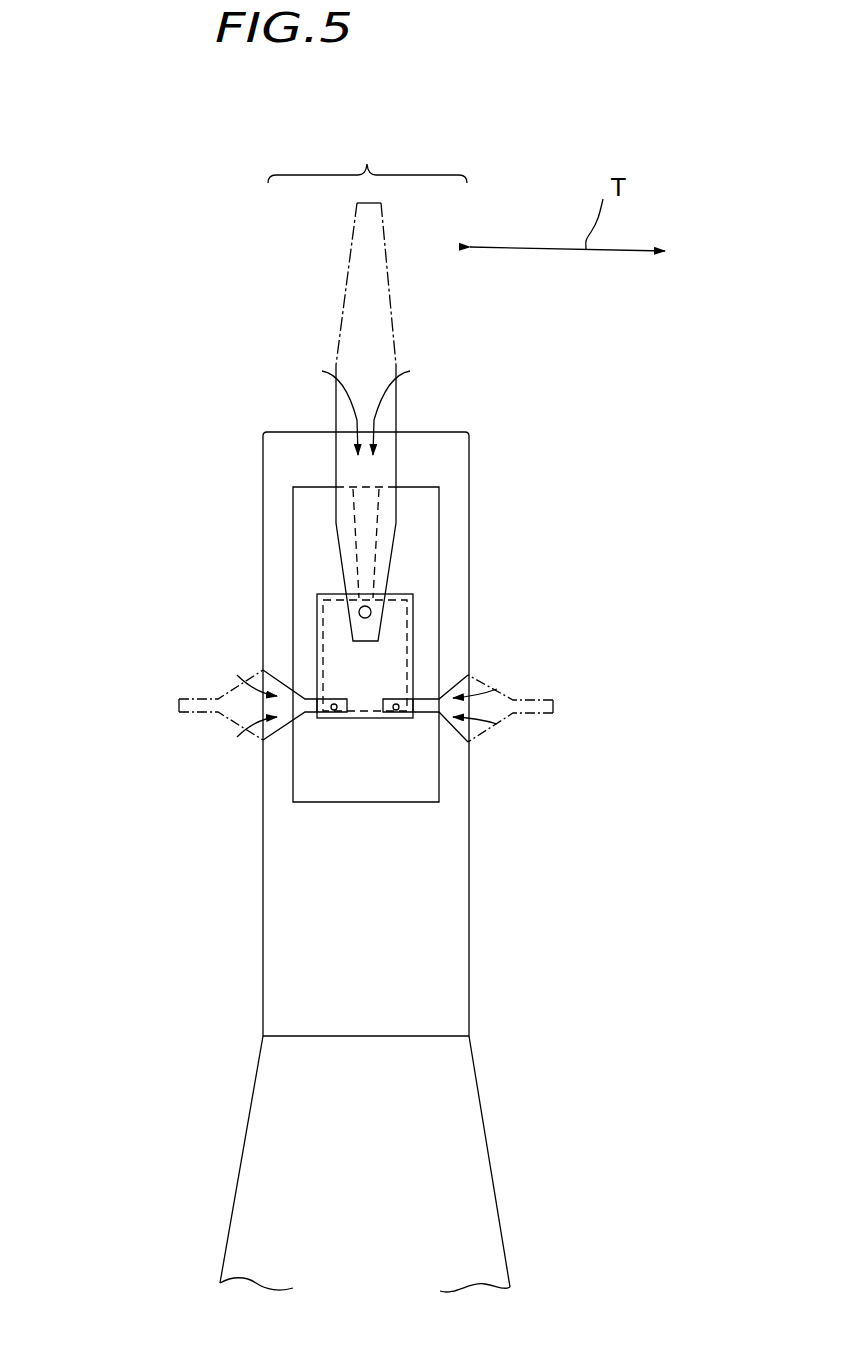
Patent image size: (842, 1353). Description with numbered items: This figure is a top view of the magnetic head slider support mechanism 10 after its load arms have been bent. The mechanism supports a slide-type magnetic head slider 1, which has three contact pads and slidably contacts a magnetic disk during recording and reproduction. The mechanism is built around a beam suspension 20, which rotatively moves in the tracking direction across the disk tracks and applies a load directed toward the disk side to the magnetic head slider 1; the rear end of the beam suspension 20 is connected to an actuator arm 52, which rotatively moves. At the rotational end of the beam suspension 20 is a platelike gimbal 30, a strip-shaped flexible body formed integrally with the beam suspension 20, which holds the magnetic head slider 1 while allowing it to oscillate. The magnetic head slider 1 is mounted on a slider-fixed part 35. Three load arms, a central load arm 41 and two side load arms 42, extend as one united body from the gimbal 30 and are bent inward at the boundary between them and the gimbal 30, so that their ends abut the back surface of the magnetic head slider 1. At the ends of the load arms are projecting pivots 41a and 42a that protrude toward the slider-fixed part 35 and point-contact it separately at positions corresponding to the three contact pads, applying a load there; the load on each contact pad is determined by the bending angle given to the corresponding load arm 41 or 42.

The magnetic head slider support mechanism 10 is at (367, 163).
The beam suspension 20 is at (445, 922).
The actuator arm 52 is at (476, 1121).
The gimbal 30 is at (455, 510).
The load arm 41 is at (383, 458).
The pivot 41a is at (371, 612).
The slide-type magnetic head slider 1 is at (405, 648).
The slider-fixed part 35 is at (338, 653).
The load arm 42 is at (285, 724).
The pivot 42a is at (337, 713).